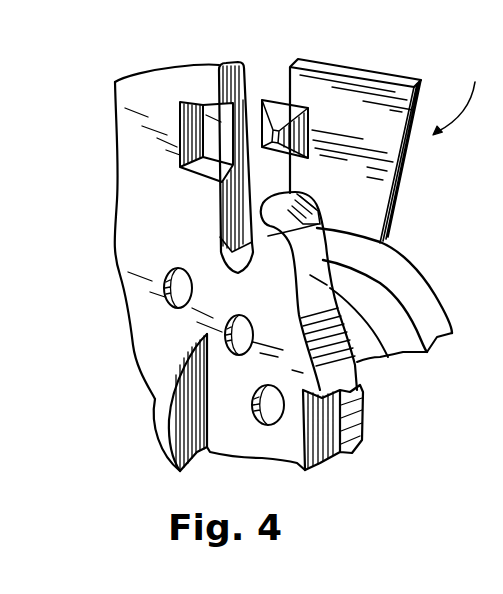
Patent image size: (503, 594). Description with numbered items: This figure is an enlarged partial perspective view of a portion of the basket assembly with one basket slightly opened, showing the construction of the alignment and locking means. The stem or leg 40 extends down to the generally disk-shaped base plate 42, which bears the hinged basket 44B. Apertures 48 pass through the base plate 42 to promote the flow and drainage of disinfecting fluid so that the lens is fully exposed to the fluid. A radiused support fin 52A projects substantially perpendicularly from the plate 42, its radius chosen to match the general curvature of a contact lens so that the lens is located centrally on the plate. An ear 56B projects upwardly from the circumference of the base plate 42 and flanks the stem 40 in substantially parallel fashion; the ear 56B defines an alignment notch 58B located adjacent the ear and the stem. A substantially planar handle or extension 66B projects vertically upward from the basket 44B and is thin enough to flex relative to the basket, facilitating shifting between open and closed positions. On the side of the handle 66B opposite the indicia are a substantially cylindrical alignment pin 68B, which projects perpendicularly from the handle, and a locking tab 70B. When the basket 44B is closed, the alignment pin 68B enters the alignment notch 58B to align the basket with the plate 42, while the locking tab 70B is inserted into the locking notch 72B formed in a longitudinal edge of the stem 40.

The stem or leg 40 is at (137, 95).
The base plate 42 is at (143, 322).
The basket 44B is at (440, 280).
The apertures 48 is at (163, 296).
The support fin 52A is at (168, 413).
The ear 56B is at (373, 357).
The alignment notch 58B is at (262, 228).
The handle or extension 66B is at (428, 90).
The alignment pin 68B is at (300, 207).
The locking tab 70B is at (282, 110).
The locking notch 72B is at (198, 106).